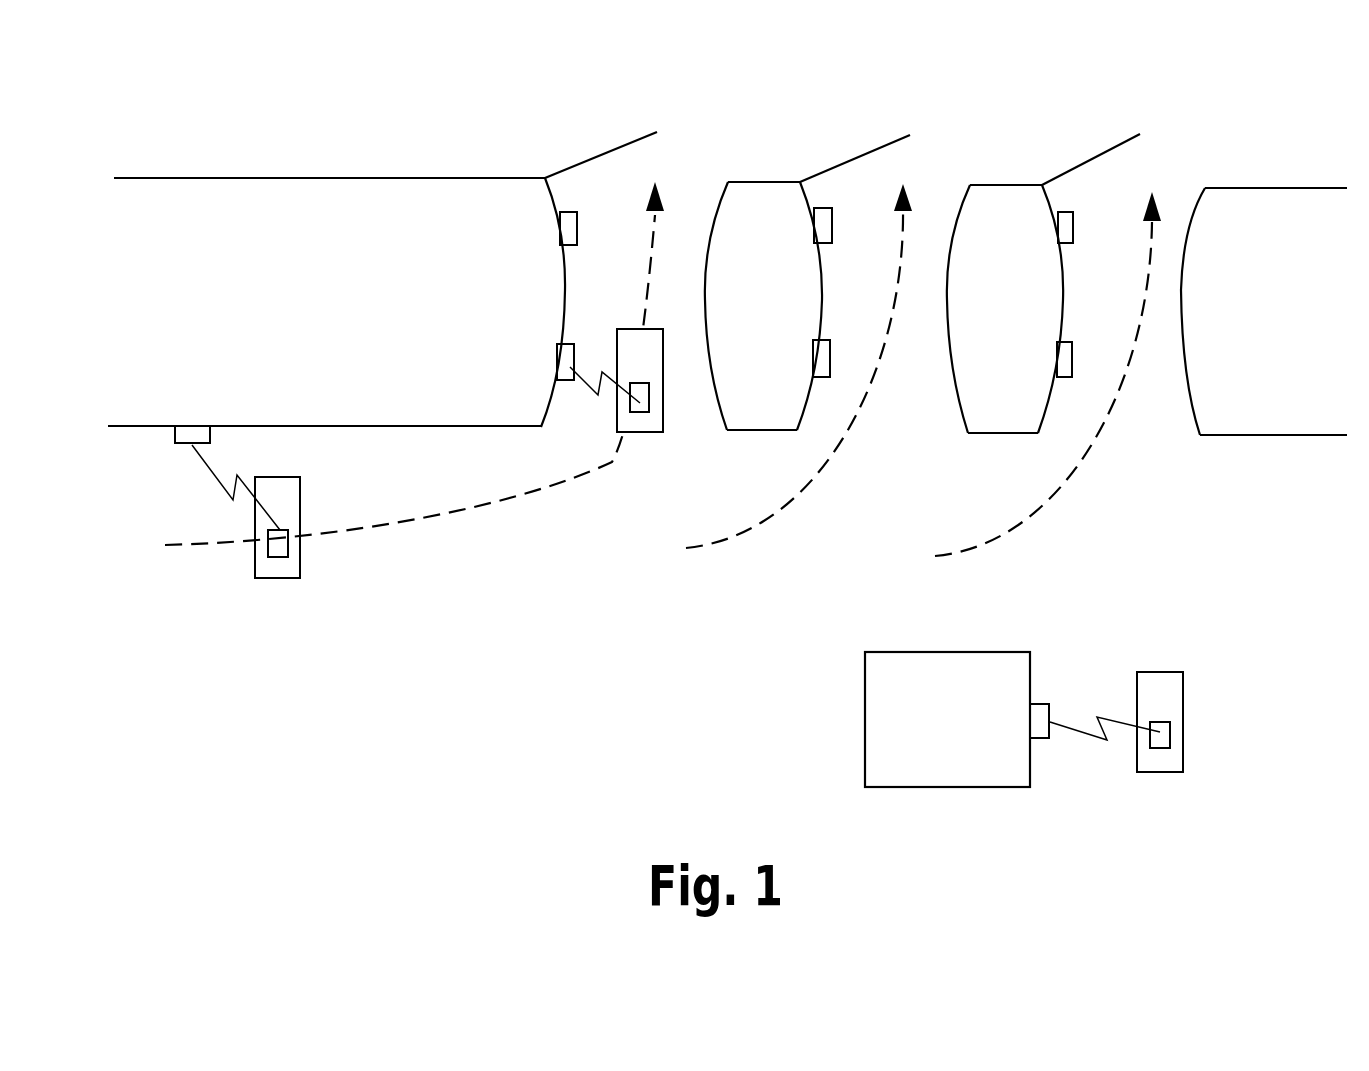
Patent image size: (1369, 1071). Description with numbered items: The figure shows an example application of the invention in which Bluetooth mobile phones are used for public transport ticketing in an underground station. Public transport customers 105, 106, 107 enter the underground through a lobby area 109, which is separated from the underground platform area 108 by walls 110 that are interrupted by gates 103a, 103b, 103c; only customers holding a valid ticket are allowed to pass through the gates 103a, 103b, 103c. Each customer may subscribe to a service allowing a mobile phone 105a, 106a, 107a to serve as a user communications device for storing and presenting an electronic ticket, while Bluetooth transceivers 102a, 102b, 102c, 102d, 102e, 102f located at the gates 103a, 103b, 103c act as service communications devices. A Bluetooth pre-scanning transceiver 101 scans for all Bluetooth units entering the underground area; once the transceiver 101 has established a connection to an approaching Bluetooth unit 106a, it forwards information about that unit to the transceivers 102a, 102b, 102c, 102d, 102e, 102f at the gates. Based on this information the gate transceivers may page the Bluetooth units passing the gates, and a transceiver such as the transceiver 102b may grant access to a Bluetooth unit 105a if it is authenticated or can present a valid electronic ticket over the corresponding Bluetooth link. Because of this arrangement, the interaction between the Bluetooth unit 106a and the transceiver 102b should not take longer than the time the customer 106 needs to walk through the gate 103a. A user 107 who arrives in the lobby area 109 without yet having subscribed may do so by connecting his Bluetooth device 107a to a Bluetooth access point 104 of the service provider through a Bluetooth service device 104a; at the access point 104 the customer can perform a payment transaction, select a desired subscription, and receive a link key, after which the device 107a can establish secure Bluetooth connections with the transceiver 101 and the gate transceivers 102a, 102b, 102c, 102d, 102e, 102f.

The pre-scanning transceiver 101 is at (192, 423).
The Bluetooth transceiver 102a is at (562, 233).
The Bluetooth transceiver 102b is at (558, 364).
The Bluetooth transceiver 102c is at (817, 225).
The Bluetooth transceiver 102d is at (823, 367).
The Bluetooth transceiver 102e is at (1058, 222).
The Bluetooth transceiver 102f is at (1063, 358).
The underground gate 103a is at (608, 152).
The underground gate 103b is at (873, 145).
The underground gate 103c is at (1115, 149).
The Bluetooth access point 104 is at (983, 701).
The Bluetooth service device 104a is at (1037, 703).
The public transport customer 105 is at (626, 406).
The mobile phone 105a is at (640, 403).
The public transport customer 106 is at (321, 535).
The mobile phone 106a is at (280, 548).
The public transport customer 107 is at (1207, 702).
The mobile phone 107a is at (1160, 732).
The underground platform area 108 is at (441, 51).
The lobby area 109 is at (452, 683).
The wall 110 is at (293, 175).